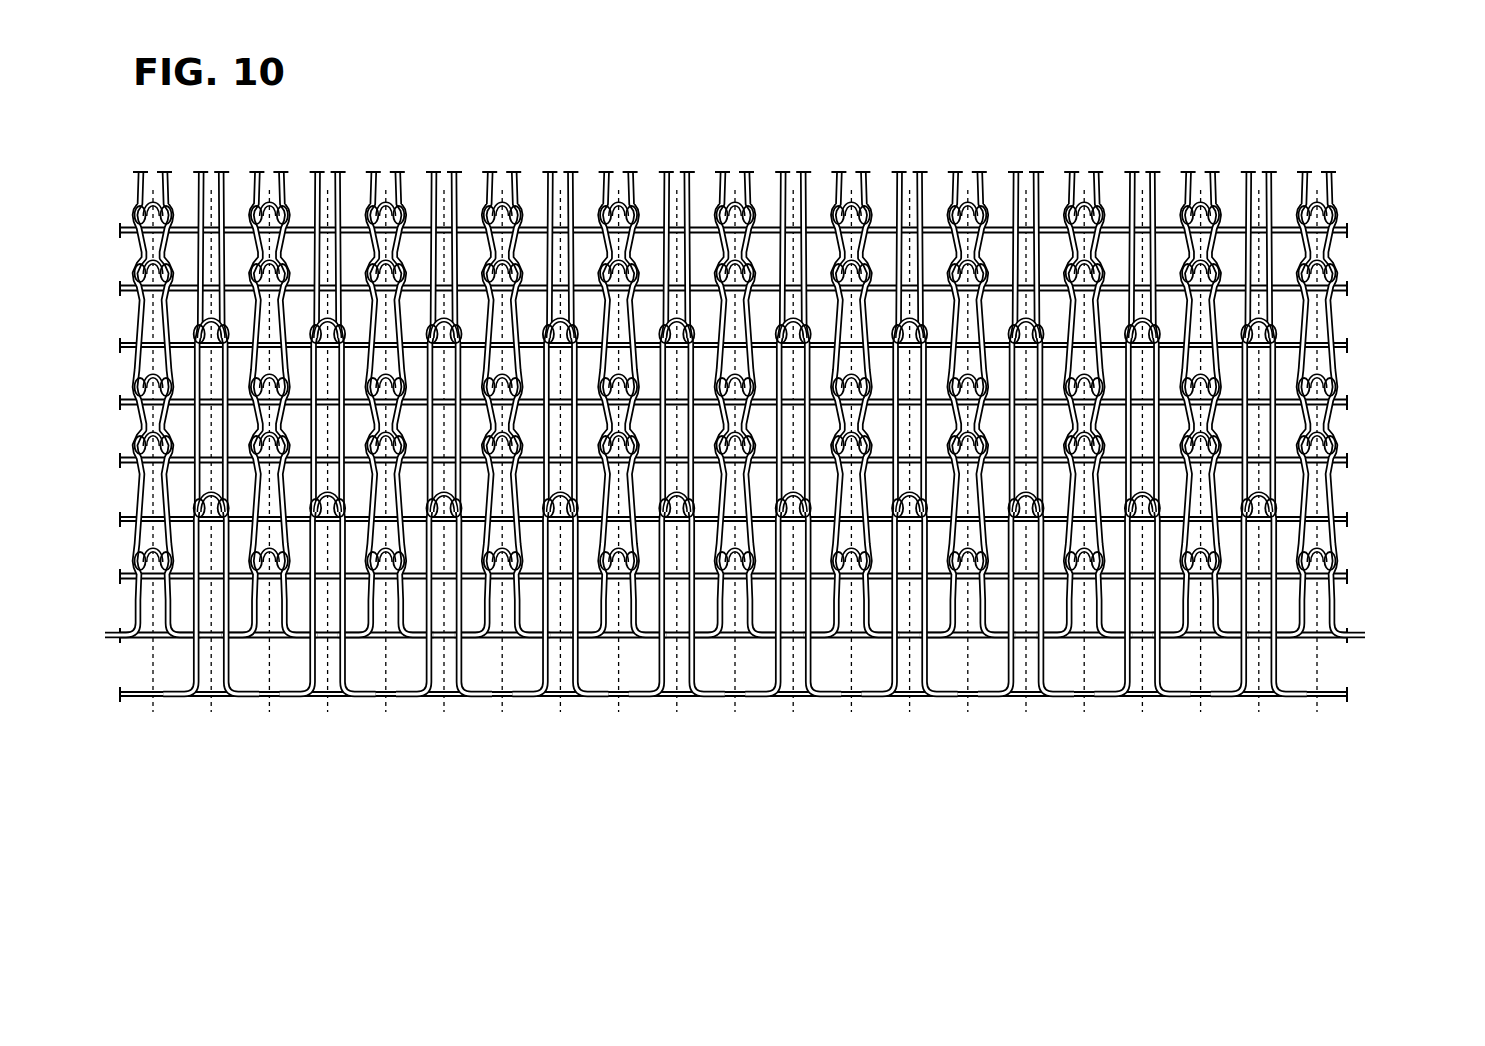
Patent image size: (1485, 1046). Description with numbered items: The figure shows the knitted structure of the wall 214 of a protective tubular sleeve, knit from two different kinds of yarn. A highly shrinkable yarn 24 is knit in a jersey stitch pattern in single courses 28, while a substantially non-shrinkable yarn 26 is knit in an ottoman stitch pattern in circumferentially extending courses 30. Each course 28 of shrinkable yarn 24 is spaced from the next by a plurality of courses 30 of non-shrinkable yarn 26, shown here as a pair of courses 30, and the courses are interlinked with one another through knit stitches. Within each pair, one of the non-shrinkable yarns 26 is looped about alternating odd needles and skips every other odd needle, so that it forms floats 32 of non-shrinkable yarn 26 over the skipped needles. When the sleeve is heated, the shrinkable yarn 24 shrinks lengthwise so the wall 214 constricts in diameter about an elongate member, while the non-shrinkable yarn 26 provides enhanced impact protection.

The wall 214 is at (1328, 174).
The floats 32 is at (1118, 282).
The non-shrinkable yarn 26 is at (1349, 633).
The courses of non-shrinkable yarn 30 is at (792, 424).
The shrinkable yarn 24 is at (786, 507).
The courses of shrinkable yarn 28 is at (1349, 692).